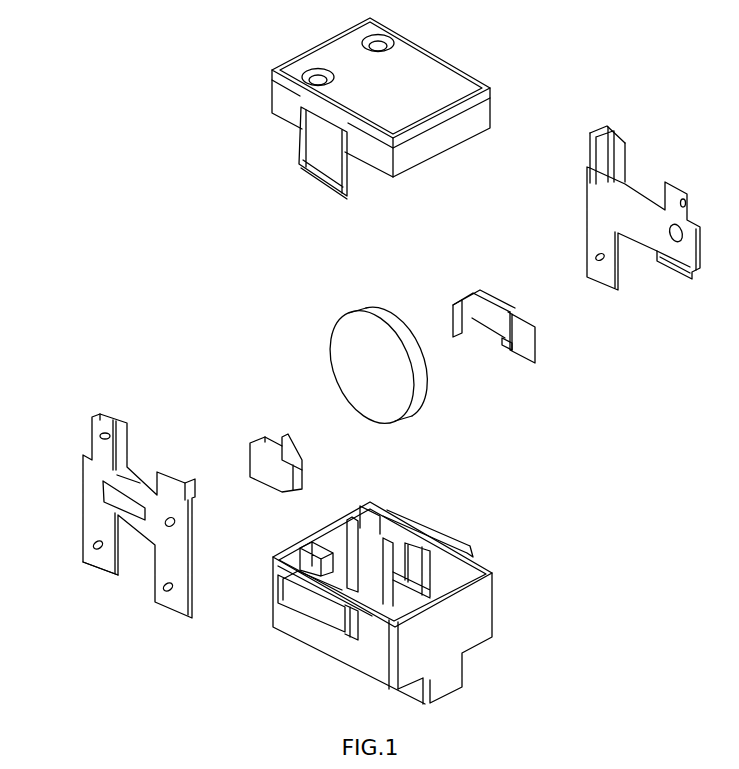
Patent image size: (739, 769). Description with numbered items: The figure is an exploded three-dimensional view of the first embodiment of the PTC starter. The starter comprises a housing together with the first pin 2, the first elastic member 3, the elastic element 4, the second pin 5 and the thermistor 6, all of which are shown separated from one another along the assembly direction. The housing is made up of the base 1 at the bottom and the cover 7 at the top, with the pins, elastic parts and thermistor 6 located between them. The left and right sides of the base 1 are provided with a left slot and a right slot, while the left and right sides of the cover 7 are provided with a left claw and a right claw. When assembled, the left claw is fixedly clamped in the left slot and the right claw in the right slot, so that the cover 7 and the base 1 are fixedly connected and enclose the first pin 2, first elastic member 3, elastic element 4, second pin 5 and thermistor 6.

The base 1 is at (447, 625).
The first pin 2 is at (93, 488).
The first elastic member 3 is at (252, 442).
The elastic element 4 is at (520, 325).
The second pin 5 is at (622, 203).
The thermistor 6 is at (363, 370).
The cover 7 is at (407, 72).